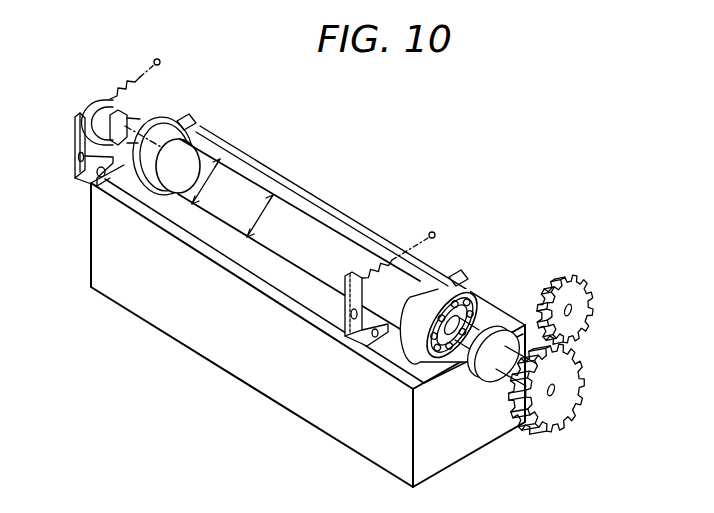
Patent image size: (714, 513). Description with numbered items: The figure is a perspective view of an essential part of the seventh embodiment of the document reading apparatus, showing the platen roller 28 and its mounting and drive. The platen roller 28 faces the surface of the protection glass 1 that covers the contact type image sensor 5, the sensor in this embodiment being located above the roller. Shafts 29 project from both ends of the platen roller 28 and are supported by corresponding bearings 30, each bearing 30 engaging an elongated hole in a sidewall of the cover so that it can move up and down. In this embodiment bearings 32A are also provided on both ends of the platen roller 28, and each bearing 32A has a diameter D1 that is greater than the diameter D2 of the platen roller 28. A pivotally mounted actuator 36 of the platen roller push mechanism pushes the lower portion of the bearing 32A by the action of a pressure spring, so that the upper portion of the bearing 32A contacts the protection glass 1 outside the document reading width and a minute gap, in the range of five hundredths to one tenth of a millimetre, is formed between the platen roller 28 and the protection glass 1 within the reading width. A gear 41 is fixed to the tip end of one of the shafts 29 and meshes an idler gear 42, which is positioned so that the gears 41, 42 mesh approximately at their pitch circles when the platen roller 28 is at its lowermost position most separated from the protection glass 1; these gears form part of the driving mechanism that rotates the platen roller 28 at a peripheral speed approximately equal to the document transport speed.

The protection glass 1 is at (222, 240).
The contact type image sensor 5 is at (250, 342).
The platen roller 28 is at (293, 210).
The shafts 29 is at (132, 130).
The bearing 30 is at (115, 98).
The bearings 32A is at (113, 198).
The actuator 36 is at (190, 120).
The gear 41 is at (573, 382).
The idler gear 42 is at (582, 315).